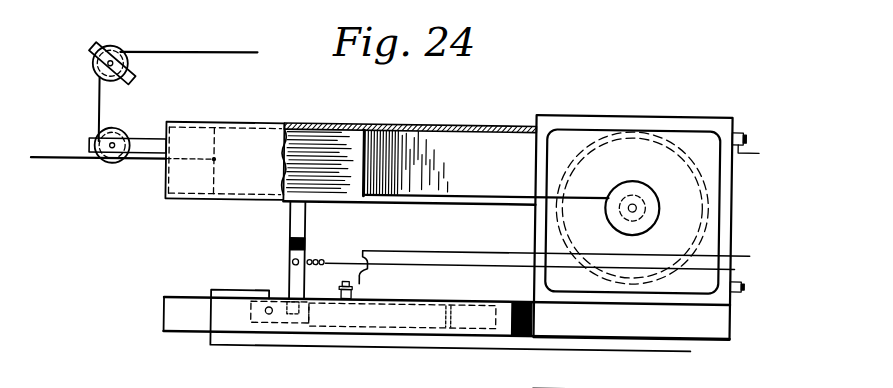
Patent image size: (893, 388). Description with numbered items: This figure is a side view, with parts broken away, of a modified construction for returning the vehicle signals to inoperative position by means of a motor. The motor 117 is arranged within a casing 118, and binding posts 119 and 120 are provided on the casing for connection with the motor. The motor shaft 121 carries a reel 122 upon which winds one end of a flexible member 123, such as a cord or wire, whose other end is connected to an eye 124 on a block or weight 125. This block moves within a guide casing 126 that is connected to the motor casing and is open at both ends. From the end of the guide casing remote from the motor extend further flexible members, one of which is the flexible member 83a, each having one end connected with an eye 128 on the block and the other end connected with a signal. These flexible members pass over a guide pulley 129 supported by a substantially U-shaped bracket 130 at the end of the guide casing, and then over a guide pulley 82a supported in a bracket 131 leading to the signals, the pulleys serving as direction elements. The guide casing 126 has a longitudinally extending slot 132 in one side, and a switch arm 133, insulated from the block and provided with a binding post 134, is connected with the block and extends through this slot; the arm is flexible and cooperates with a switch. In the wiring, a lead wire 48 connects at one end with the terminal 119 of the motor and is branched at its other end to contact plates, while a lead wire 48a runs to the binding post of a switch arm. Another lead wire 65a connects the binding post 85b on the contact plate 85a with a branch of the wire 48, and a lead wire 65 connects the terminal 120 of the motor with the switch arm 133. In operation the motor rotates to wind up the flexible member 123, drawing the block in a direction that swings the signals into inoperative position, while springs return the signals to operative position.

The lead wire 48 is at (758, 149).
The lead wire 48a is at (475, 347).
The lead wire 65 is at (482, 266).
The lead wire 65a is at (447, 251).
The guide pulley 82a is at (122, 57).
The flexible member 83a is at (50, 168).
The contact plate 85a is at (185, 322).
The binding post 85b is at (347, 283).
The motor 117 is at (672, 165).
The casing 118 is at (640, 110).
The binding post 119 is at (743, 131).
The binding post 120 is at (743, 278).
The motor shaft 121 is at (627, 212).
The reel 122 is at (658, 205).
The flexible member 123 is at (507, 186).
The eye 124 is at (366, 191).
The block or weight 125 is at (372, 118).
The guide casing 126 is at (323, 115).
The eye 128 is at (211, 164).
The guide pulley 129 is at (110, 162).
The U-shaped bracket 130 is at (152, 147).
The bracket 131 is at (97, 55).
The slot 132 is at (357, 204).
The switch arm 133 is at (288, 276).
The binding post 134 is at (293, 262).